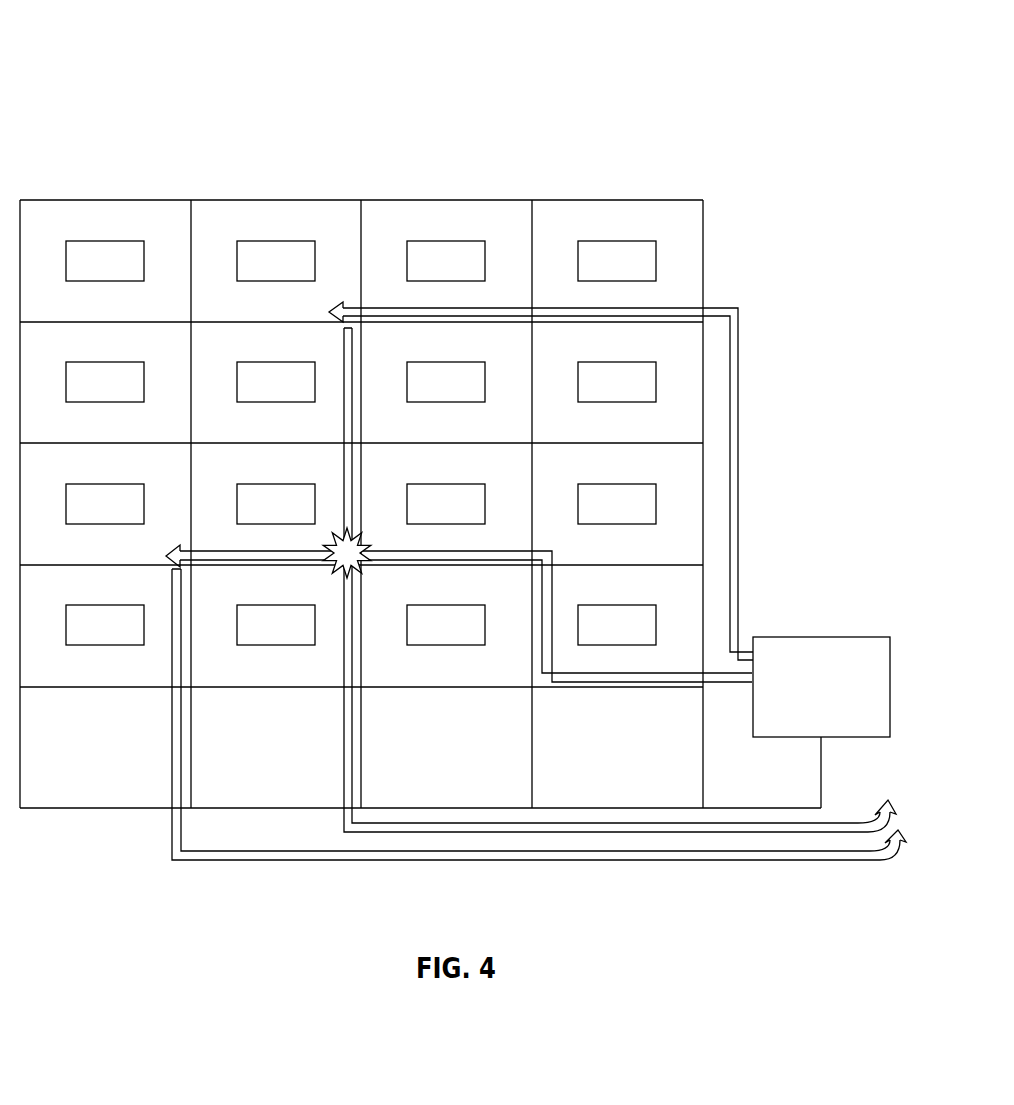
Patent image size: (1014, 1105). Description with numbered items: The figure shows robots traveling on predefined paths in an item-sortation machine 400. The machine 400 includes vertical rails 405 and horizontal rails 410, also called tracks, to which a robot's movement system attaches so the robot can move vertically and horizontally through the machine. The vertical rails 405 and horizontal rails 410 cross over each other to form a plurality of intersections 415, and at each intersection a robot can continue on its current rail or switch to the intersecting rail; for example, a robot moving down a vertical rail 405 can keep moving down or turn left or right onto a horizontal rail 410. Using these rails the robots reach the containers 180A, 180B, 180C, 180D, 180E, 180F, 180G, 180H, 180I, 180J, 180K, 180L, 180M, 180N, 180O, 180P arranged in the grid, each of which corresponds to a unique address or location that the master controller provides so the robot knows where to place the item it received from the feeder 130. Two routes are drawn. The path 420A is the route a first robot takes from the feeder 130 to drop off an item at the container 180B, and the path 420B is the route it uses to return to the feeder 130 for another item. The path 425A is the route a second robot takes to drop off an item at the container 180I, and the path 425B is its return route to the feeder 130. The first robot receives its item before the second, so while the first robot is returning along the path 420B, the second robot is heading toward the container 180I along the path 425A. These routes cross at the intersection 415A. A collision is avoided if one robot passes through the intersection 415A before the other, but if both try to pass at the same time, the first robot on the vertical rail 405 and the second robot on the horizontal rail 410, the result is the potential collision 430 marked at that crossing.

The item-sortation machine 400 is at (199, 106).
The vertical rails 405 is at (532, 230).
The horizontal rails 410 is at (662, 320).
The intersections 415 is at (720, 433).
The intersection 415A is at (378, 575).
The path 420A is at (740, 461).
The path 420B is at (345, 412).
The path 425A is at (627, 683).
The path 425B is at (322, 861).
The potential collision 430 is at (343, 578).
The feeder 130 is at (801, 718).
The container 180A is at (76, 276).
The container 180B is at (247, 276).
The container 180C is at (417, 276).
The container 180D is at (588, 276).
The container 180E is at (76, 397).
The container 180F is at (247, 397).
The container 180G is at (417, 397).
The container 180H is at (588, 397).
The container 180I is at (78, 519).
The container 180J is at (247, 519).
The container 180K is at (417, 519).
The container 180L is at (588, 519).
The container 180M is at (76, 640).
The container 180N is at (247, 640).
The container 180O is at (417, 640).
The container 180P is at (588, 640).